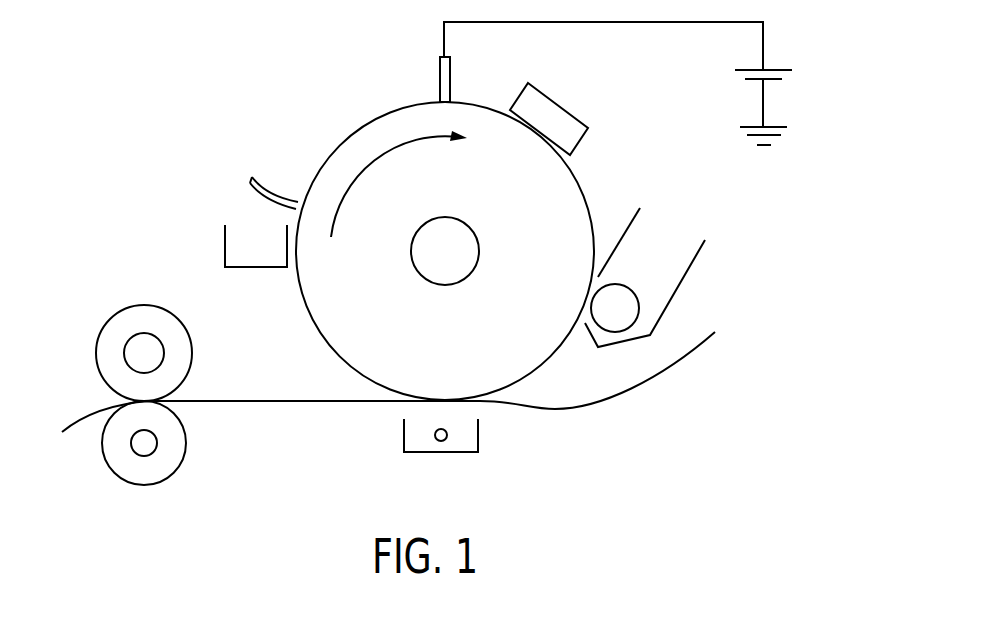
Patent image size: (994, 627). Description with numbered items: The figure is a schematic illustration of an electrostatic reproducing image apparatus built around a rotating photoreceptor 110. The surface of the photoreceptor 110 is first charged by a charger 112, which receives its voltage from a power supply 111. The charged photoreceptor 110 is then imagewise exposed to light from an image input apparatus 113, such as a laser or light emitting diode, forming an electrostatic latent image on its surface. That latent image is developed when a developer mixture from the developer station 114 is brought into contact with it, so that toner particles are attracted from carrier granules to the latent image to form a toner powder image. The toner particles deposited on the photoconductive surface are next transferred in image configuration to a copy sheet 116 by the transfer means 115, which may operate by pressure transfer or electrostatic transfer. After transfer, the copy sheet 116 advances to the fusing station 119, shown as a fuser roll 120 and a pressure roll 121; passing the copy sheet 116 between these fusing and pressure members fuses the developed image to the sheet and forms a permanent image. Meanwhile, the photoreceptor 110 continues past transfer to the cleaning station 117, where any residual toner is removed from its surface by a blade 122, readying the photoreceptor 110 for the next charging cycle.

The photoreceptor 110 is at (580, 183).
The power supply 111 is at (765, 50).
The charger 112 is at (440, 77).
The image input apparatus 113 is at (562, 107).
The developer station 114 is at (660, 262).
The transfer means 115 is at (478, 428).
The copy sheet 116 is at (667, 365).
The cleaning station 117 is at (232, 203).
The fusing station 119 is at (152, 351).
The fuser roll 120 is at (195, 353).
The pressure roll 121 is at (185, 442).
The blade 122 is at (275, 193).